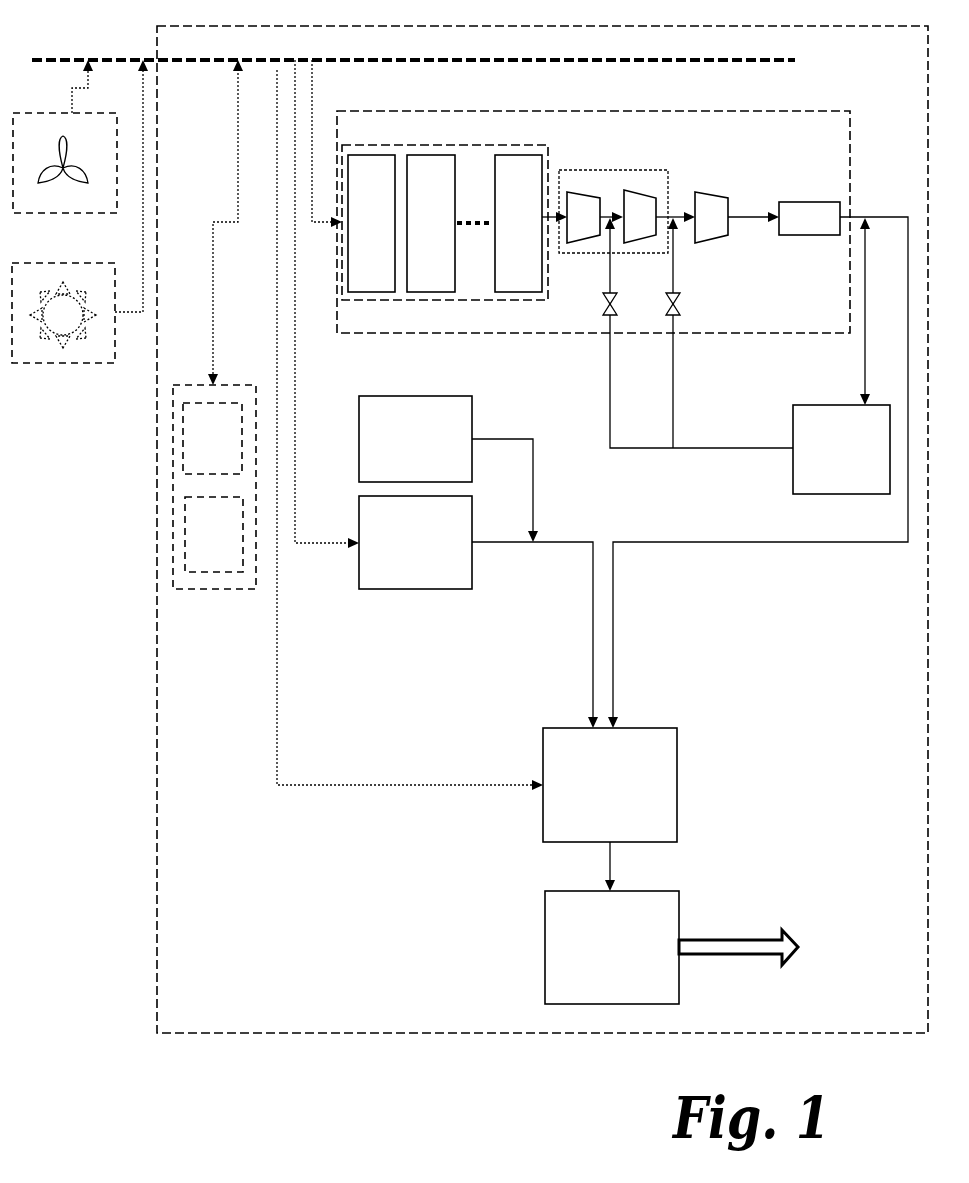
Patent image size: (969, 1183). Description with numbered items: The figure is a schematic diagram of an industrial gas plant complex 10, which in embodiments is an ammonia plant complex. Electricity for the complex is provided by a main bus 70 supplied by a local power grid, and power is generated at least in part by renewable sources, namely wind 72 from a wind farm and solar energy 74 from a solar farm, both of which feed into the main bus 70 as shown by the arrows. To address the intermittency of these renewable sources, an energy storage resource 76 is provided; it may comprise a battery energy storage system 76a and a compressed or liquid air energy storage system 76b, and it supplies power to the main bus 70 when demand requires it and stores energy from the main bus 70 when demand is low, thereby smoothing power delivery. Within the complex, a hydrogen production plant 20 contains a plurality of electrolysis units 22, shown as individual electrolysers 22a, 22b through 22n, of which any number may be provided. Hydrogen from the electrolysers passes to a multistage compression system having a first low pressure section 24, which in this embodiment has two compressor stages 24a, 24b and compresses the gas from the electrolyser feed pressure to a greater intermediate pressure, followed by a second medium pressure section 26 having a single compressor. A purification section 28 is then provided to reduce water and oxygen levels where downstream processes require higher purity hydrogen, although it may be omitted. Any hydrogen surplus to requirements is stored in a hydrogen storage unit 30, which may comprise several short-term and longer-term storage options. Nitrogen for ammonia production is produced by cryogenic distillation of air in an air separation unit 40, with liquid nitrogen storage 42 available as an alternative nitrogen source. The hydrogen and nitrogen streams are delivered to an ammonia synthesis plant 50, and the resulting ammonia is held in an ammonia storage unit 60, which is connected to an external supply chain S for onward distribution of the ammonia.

The industrial gas plant complex 10 is at (542, 529).
The hydrogen production plant 20 is at (622, 419).
The plurality of electrolysis units 22 is at (445, 207).
The electrolysis unit 22a is at (371, 223).
The electrolysis unit 22b is at (431, 223).
The electrolysis unit 22n is at (518, 223).
The first low pressure compression section 24 is at (613, 194).
The compressor stage 24a is at (585, 208).
The compressor stage 24b is at (643, 207).
The second medium pressure compression section 26 is at (713, 206).
The purification section 28 is at (809, 218).
The hydrogen storage unit 30 is at (841, 449).
The air separation unit 40 is at (478, 612).
The liquid nitrogen storage 42 is at (448, 469).
The ammonia synthesis plant 50 is at (610, 809).
The ammonia storage unit 60 is at (612, 947).
The main bus 70 is at (413, 45).
The wind energy source 72 is at (65, 136).
The solar energy source 74 is at (80, 211).
The energy storage resource 76 is at (214, 347).
The battery energy storage system 76a is at (212, 438).
The compressed or liquid air energy storage system 76b is at (214, 534).
The external supply chain S is at (738, 933).